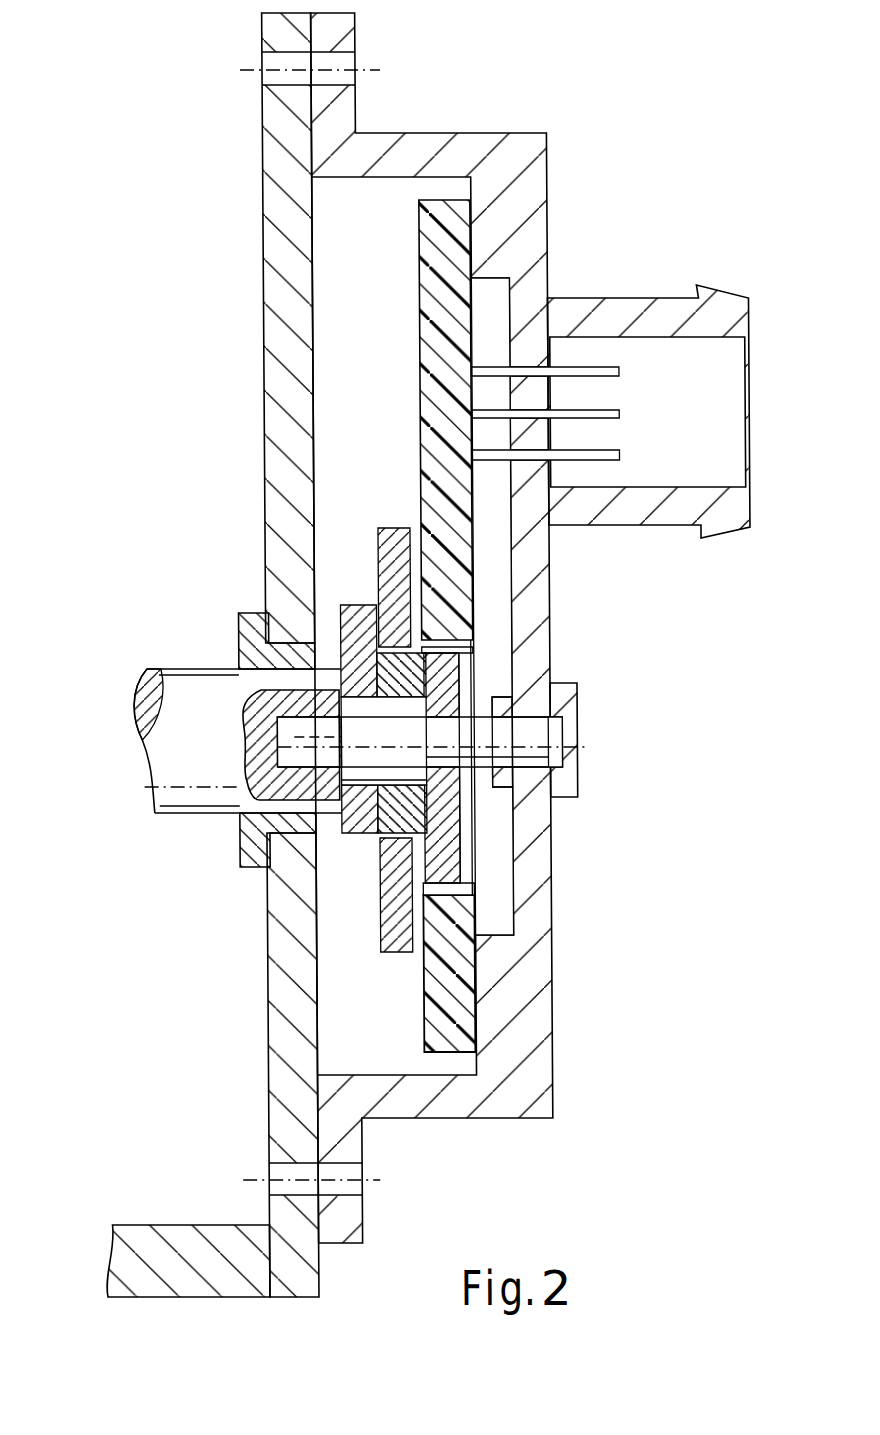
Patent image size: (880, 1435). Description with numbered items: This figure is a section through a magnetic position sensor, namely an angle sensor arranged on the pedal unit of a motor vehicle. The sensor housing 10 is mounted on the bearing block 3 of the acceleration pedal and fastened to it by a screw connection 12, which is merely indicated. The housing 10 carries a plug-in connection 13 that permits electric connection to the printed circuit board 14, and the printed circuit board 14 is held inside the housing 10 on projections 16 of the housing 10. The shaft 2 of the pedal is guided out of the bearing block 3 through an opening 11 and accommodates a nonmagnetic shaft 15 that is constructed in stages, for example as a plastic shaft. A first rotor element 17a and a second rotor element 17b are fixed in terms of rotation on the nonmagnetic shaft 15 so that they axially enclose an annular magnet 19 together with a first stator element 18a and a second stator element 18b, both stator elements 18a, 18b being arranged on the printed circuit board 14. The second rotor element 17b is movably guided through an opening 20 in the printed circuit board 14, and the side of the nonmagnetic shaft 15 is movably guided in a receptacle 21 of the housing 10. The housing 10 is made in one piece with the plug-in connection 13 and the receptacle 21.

The shaft 2 is at (162, 770).
The bearing block 3 is at (114, 1233).
The housing 10 is at (468, 142).
The opening 11 is at (286, 848).
The screw connection 12 is at (372, 76).
The plug-in connection 13 is at (705, 355).
The printed circuit board 14 is at (457, 223).
The nonmagnetic shaft 15 is at (278, 737).
The projections 16 is at (490, 270).
The first rotor element 17a is at (344, 617).
The second rotor element 17b is at (453, 848).
The first stator element 18a is at (375, 545).
The second stator element 18b is at (374, 940).
The annular magnet 19 is at (441, 672).
The opening 20 is at (466, 647).
The receptacle 21 is at (562, 758).